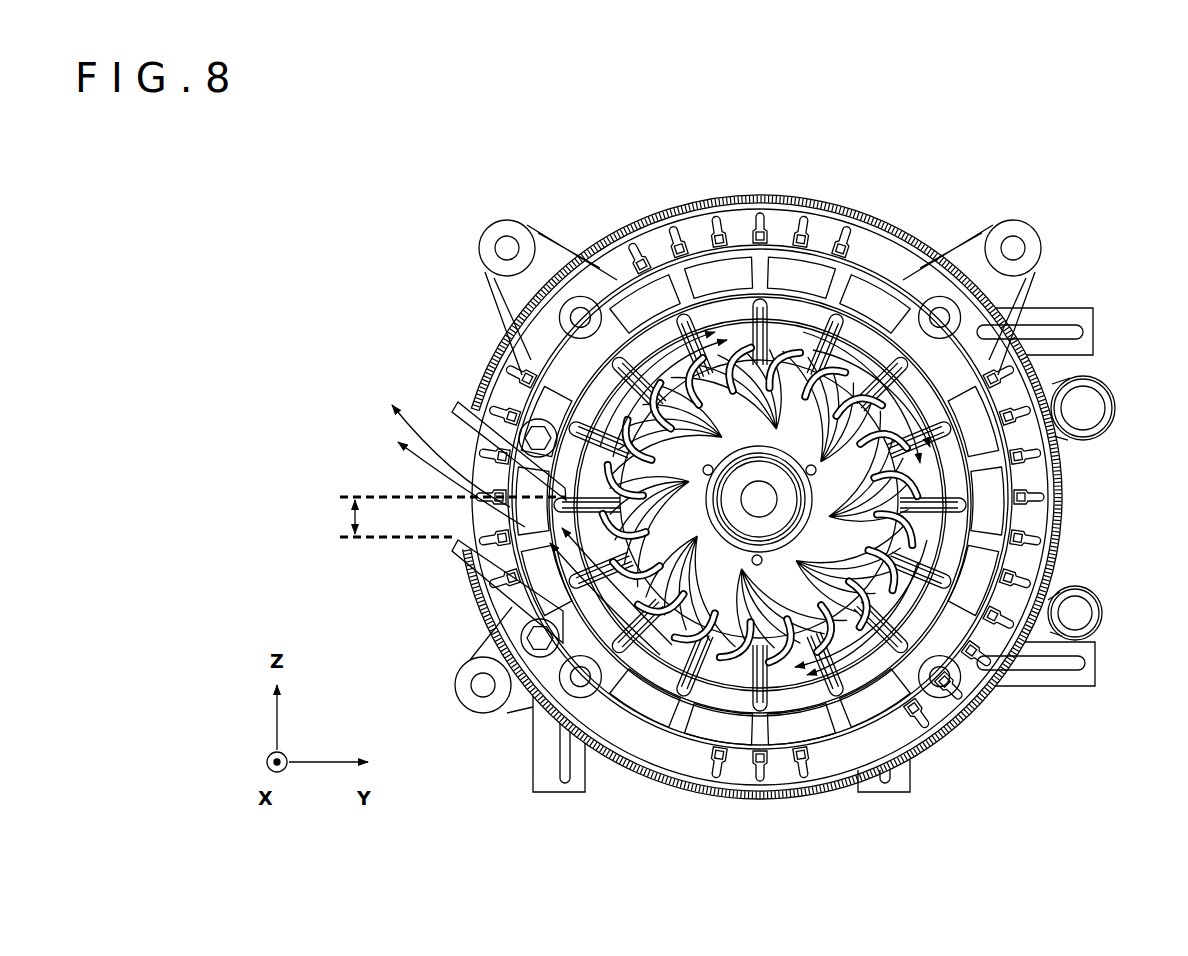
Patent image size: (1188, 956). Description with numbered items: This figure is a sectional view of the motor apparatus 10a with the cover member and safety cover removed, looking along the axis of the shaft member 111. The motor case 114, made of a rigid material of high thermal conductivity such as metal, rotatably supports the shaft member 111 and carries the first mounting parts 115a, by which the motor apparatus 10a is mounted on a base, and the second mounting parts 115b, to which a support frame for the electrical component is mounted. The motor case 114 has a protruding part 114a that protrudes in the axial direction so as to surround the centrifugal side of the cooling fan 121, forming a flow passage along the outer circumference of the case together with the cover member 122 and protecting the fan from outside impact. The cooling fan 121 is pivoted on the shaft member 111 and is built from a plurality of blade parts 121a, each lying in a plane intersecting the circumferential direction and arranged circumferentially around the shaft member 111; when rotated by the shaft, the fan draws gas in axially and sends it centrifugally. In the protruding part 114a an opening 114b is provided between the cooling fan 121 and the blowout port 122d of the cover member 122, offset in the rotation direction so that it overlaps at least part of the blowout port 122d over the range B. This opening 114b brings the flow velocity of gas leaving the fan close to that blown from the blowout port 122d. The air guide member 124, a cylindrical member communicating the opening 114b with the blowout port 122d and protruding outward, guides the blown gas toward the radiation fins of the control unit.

The motor apparatus 10a is at (515, 185).
The shaft member 111 is at (764, 492).
The motor case 114 is at (648, 228).
The protruding part 114a is at (727, 295).
The opening 114b is at (552, 582).
The first mounting parts 115a is at (580, 776).
The second mounting parts 115b is at (500, 248).
The cooling fan 121 is at (857, 505).
The blade parts 121a is at (873, 453).
The cover member 122 is at (487, 362).
The blowout port 122d is at (427, 487).
The air guide member 124 is at (457, 406).
The range B is at (340, 517).